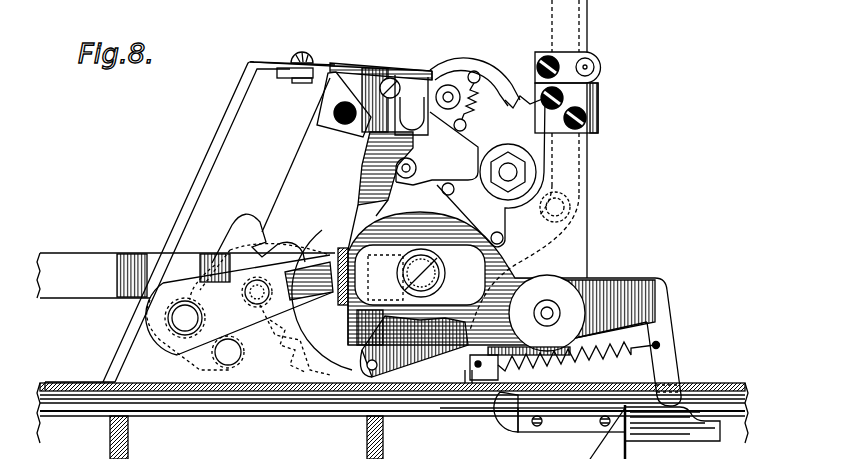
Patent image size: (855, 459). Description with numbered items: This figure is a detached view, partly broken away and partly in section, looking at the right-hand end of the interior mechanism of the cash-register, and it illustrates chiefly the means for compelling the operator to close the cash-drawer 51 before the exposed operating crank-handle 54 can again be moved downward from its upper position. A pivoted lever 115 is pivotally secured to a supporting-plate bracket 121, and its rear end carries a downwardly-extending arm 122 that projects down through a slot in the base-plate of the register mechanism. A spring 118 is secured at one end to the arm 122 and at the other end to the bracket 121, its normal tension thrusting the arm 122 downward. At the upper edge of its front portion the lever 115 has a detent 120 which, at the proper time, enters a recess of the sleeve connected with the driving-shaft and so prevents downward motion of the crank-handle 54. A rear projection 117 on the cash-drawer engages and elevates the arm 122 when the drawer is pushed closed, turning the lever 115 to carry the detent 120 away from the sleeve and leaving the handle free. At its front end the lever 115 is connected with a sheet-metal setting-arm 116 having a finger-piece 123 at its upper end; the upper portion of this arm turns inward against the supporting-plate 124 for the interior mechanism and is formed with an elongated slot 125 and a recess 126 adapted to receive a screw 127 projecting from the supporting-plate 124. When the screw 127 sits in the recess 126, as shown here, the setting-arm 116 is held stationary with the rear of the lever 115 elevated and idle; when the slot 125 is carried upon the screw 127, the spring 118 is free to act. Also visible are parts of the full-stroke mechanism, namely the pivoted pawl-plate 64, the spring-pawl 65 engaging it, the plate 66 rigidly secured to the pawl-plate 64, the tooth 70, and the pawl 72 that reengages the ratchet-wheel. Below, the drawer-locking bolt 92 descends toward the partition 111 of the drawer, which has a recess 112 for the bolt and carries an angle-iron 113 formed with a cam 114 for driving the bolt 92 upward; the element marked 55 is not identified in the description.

The cash-drawer 51 is at (132, 437).
The exposed operating crank-handle 54 is at (343, 248).
The horizontal bar 55 is at (66, 262).
The pivoted pawl-plate 64 is at (567, 173).
The spring-pawl 65 is at (472, 62).
The plate 66 is at (486, 195).
The tooth 70 is at (512, 95).
The pawl 72 is at (424, 183).
The bolt 92 is at (495, 410).
The partition 111 is at (414, 410).
The recess 112 is at (508, 424).
The angle-iron 113 is at (590, 433).
The cam 114 is at (543, 421).
The pivoted lever 115 is at (607, 282).
The setting-arm 116 is at (365, 183).
The rear projection 117 is at (672, 432).
The spring 118 is at (592, 364).
The detent 120 is at (366, 324).
The supporting-plate bracket 121 is at (523, 270).
The downwardly-extending arm 122 is at (668, 362).
The finger-piece 123 is at (343, 62).
The supporting-plate 124 is at (326, 156).
The elongated slot 125 is at (427, 73).
The recess 126 is at (368, 115).
The screw 127 is at (388, 72).